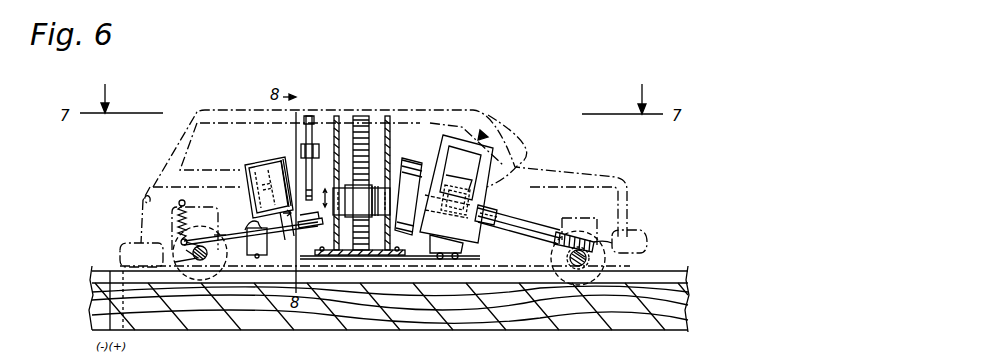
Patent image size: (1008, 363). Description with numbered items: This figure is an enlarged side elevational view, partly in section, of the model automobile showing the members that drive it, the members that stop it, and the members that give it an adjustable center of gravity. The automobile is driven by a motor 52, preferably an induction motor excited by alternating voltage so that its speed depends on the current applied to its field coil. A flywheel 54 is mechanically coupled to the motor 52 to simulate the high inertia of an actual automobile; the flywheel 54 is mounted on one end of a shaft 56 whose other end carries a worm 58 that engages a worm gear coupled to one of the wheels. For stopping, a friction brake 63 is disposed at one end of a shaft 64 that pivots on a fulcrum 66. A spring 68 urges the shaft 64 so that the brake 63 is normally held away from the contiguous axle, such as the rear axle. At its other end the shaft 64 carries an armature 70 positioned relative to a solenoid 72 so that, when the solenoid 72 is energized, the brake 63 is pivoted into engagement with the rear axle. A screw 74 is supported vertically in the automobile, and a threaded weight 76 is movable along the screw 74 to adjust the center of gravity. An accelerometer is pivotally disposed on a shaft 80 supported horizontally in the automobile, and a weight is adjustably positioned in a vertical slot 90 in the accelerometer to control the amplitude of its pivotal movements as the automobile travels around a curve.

The motor 52 is at (482, 138).
The flywheel 54 is at (434, 165).
The shaft 56 is at (508, 221).
The worm 58 is at (580, 233).
The friction brake 63 is at (183, 242).
The shaft 64 is at (222, 212).
The fulcrum 66 is at (253, 223).
The spring 68 is at (180, 222).
The armature 70 is at (285, 234).
The solenoid 72 is at (288, 158).
The screw 74 is at (367, 134).
The threaded weight 76 is at (358, 194).
The shaft 80 is at (316, 118).
The slot 90 is at (320, 148).